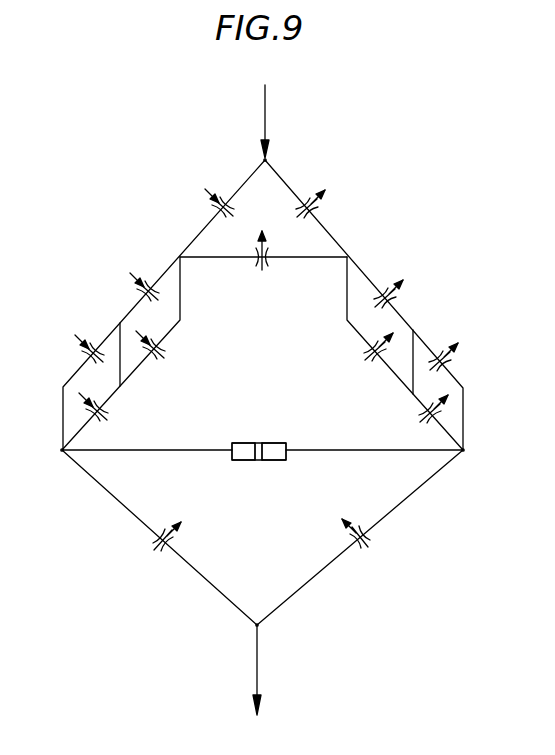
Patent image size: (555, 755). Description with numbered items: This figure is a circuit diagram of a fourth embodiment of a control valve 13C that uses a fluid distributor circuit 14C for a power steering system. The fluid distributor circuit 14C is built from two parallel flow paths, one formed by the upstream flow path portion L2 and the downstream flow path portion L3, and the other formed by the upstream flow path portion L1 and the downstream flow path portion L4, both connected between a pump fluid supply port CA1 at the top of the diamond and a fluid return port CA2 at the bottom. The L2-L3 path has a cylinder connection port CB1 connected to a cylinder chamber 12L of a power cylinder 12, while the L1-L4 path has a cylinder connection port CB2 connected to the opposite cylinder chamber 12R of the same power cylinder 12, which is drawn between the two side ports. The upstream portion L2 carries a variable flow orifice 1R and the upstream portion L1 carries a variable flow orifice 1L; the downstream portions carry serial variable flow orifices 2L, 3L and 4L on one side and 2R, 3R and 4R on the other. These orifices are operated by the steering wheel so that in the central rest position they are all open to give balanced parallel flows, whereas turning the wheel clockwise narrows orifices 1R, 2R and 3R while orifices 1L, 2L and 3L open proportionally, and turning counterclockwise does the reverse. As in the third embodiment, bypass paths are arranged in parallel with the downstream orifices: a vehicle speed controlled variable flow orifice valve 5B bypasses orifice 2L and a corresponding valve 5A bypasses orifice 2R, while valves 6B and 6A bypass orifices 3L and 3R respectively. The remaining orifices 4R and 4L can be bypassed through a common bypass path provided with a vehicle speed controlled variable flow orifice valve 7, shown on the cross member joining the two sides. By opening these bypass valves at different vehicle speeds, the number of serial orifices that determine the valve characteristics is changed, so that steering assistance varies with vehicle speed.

The control valve 13C is at (145, 194).
The fluid distributor circuit 14C is at (368, 224).
The upstream flow path portion L1 is at (247, 175).
The upstream flow path portion L2 is at (280, 179).
The downstream flow path portion L3 is at (427, 481).
The downstream flow path portion L4 is at (100, 492).
The pump fluid supply port CA1 is at (268, 157).
The fluid return port CA2 is at (260, 628).
The cylinder connection port CB1 is at (464, 452).
The cylinder connection port CB2 is at (60, 452).
The vehicle speed controlled variable flow orifice valve 7 is at (263, 261).
The power cylinder 12 is at (258, 442).
The cylinder chamber 12R is at (240, 461).
The cylinder chamber 12L is at (276, 461).
The variable flow orifice 1L is at (219, 194).
The variable flow orifice 1R is at (310, 196).
The variable flow orifice 2L is at (137, 274).
The variable flow orifice 2R is at (388, 284).
The variable flow orifice 3L is at (85, 339).
The variable flow orifice 3R is at (445, 348).
The variable flow orifice 4L is at (366, 546).
The variable flow orifice 4R is at (154, 548).
The vehicle speed controlled variable flow orifice valve 5A is at (162, 355).
The vehicle speed controlled variable flow orifice valve 5B is at (366, 362).
The vehicle speed controlled variable flow orifice valve 6A is at (107, 415).
The vehicle speed controlled variable flow orifice valve 6B is at (414, 419).